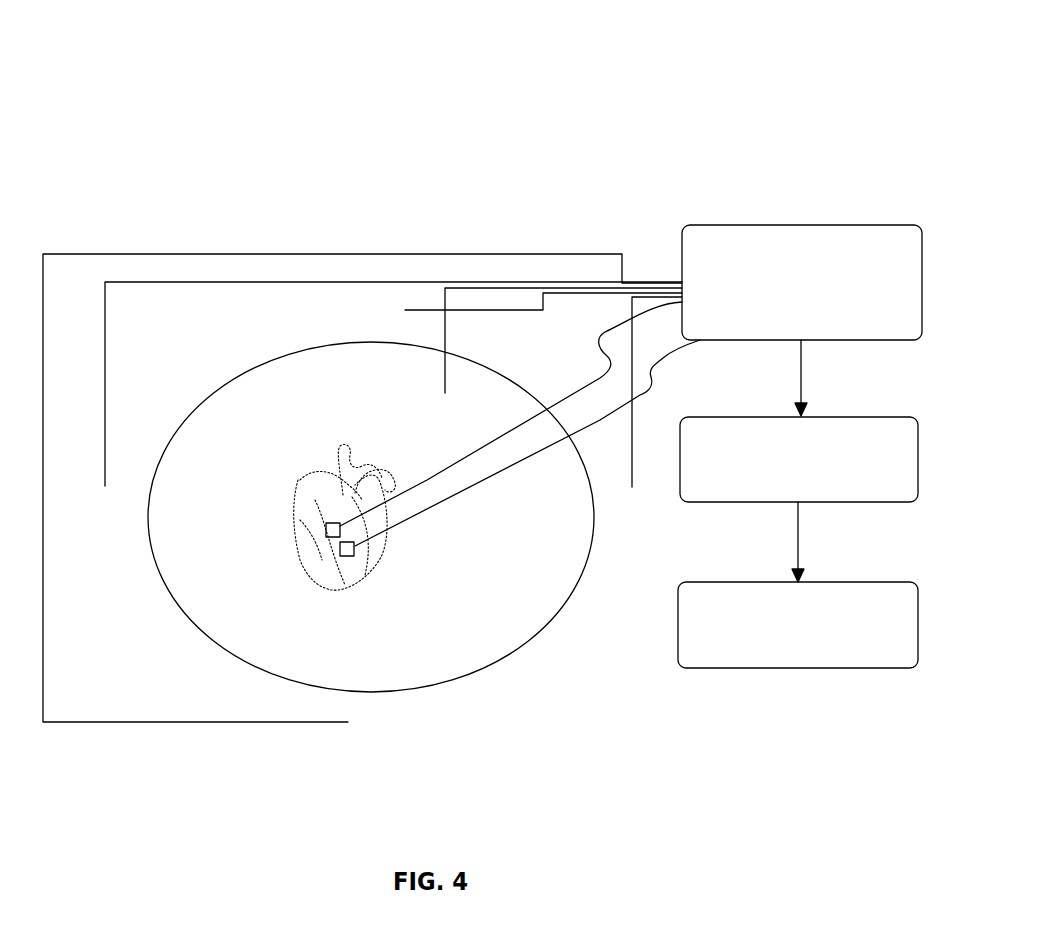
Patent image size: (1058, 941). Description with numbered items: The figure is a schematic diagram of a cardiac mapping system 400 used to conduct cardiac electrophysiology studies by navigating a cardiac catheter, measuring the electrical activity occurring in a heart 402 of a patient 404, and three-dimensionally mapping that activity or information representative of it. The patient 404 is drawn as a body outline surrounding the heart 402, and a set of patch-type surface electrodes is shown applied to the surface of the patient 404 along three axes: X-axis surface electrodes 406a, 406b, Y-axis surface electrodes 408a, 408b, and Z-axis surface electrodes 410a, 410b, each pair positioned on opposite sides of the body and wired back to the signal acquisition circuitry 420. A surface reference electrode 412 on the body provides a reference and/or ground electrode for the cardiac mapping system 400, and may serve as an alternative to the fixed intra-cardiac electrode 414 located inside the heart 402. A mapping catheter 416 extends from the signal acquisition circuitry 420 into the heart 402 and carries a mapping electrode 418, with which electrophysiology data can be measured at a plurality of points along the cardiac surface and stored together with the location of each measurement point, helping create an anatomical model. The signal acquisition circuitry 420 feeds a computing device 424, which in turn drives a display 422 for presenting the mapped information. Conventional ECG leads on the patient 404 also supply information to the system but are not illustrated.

The cardiac mapping system 400 is at (879, 85).
The heart 402 is at (367, 575).
The patient 404 is at (560, 605).
The X-axis surface electrode 406a is at (400, 322).
The X-axis surface electrode 406b is at (385, 754).
The Y-axis surface electrode 408a is at (652, 524).
The Y-axis surface electrode 408b is at (125, 522).
The Z-axis surface electrode 410a is at (465, 430).
The Z-axis surface electrode 410b is at (312, 512).
The surface reference electrode 412 is at (235, 574).
The fixed intra-cardiac electrode 414 is at (328, 536).
The mapping catheter 416 is at (587, 427).
The mapping electrode 418 is at (347, 556).
The signal acquisition circuitry 420 is at (863, 284).
The display 422 is at (850, 611).
The computing device 424 is at (817, 476).